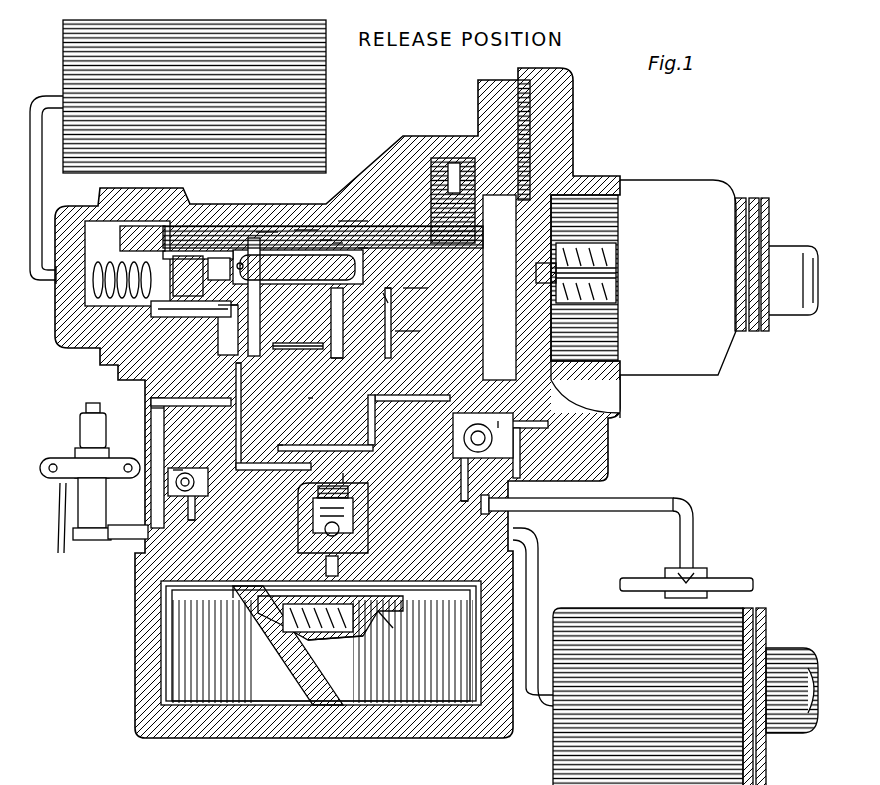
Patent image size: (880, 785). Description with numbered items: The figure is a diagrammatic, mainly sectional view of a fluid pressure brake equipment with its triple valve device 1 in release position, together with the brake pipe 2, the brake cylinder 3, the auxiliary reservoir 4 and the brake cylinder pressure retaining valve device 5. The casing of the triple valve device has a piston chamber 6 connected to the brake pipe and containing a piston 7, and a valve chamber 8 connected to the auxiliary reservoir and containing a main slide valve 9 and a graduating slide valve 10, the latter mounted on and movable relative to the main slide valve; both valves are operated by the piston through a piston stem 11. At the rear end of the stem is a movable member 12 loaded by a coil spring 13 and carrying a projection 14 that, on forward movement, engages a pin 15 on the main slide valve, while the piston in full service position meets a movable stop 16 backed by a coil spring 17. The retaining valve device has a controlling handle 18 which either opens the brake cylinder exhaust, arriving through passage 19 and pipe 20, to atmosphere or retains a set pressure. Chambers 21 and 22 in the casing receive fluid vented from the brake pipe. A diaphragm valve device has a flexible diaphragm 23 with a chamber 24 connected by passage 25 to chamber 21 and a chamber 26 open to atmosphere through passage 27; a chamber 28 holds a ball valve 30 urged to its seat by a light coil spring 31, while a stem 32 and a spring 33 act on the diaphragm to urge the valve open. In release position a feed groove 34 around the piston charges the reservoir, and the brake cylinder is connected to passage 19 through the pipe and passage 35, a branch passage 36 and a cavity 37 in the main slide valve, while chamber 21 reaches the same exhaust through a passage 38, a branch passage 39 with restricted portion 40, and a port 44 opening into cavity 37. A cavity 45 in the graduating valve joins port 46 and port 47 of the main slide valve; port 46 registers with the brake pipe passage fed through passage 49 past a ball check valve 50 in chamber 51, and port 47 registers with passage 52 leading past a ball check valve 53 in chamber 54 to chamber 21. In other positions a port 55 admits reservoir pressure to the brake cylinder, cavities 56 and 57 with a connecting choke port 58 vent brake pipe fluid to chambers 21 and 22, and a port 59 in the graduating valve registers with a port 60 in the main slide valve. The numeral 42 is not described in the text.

The triple valve device 1 is at (388, 150).
The brake pipe 2 is at (715, 575).
The brake cylinder 3 is at (660, 735).
The auxiliary reservoir 4 is at (290, 75).
The brake cylinder pressure retaining valve device 5 is at (75, 408).
The piston chamber 6 is at (607, 365).
The piston 7 is at (490, 178).
The valve chamber 8 is at (340, 232).
The main slide valve 9 is at (380, 290).
The graduating slide valve 10 is at (345, 275).
The piston stem 11 is at (318, 232).
The movable member 12 is at (128, 245).
The coil spring 13 is at (95, 262).
The projection 14 is at (183, 252).
The pin 15 is at (235, 258).
The movable stop 16 is at (555, 237).
The coil spring 17 is at (604, 249).
The controlling handle 18 is at (50, 545).
The passage 19 is at (150, 405).
The pipe 20 is at (107, 533).
The chamber 21 is at (321, 644).
The chamber 22 is at (413, 651).
The flexible diaphragm 23 is at (245, 612).
The chamber 24 is at (385, 590).
The passage 25 is at (235, 583).
The chamber 26 is at (340, 635).
The passage 27 is at (385, 622).
The chamber 28 is at (357, 519).
The ball valve 30 is at (335, 518).
The light coil spring 31 is at (345, 467).
The stem 32 is at (330, 545).
The spring 33 is at (318, 633).
The feed groove 34 is at (432, 150).
The pipe and passage 35 is at (525, 595).
The branch passage 36 is at (238, 327).
The cavity 37 is at (269, 221).
The passage 38 is at (243, 506).
The branch passage 39 is at (230, 358).
The restricted portion 40 is at (451, 516).
The passage 42 is at (307, 387).
The port 44 is at (193, 303).
The cavity 45 is at (353, 209).
The port 46 is at (408, 321).
The port 47 is at (330, 235).
The passage 49 is at (318, 361).
The ball check valve 50 is at (483, 426).
The chamber 51 is at (490, 417).
The passage 52 is at (245, 459).
The ball check valve 53 is at (180, 470).
The chamber 54 is at (170, 462).
The port 55 is at (240, 253).
The cavity 56 is at (416, 278).
The cavity 57 is at (397, 319).
The choke port 58 is at (298, 339).
The port 59 is at (307, 219).
The port 60 is at (355, 240).